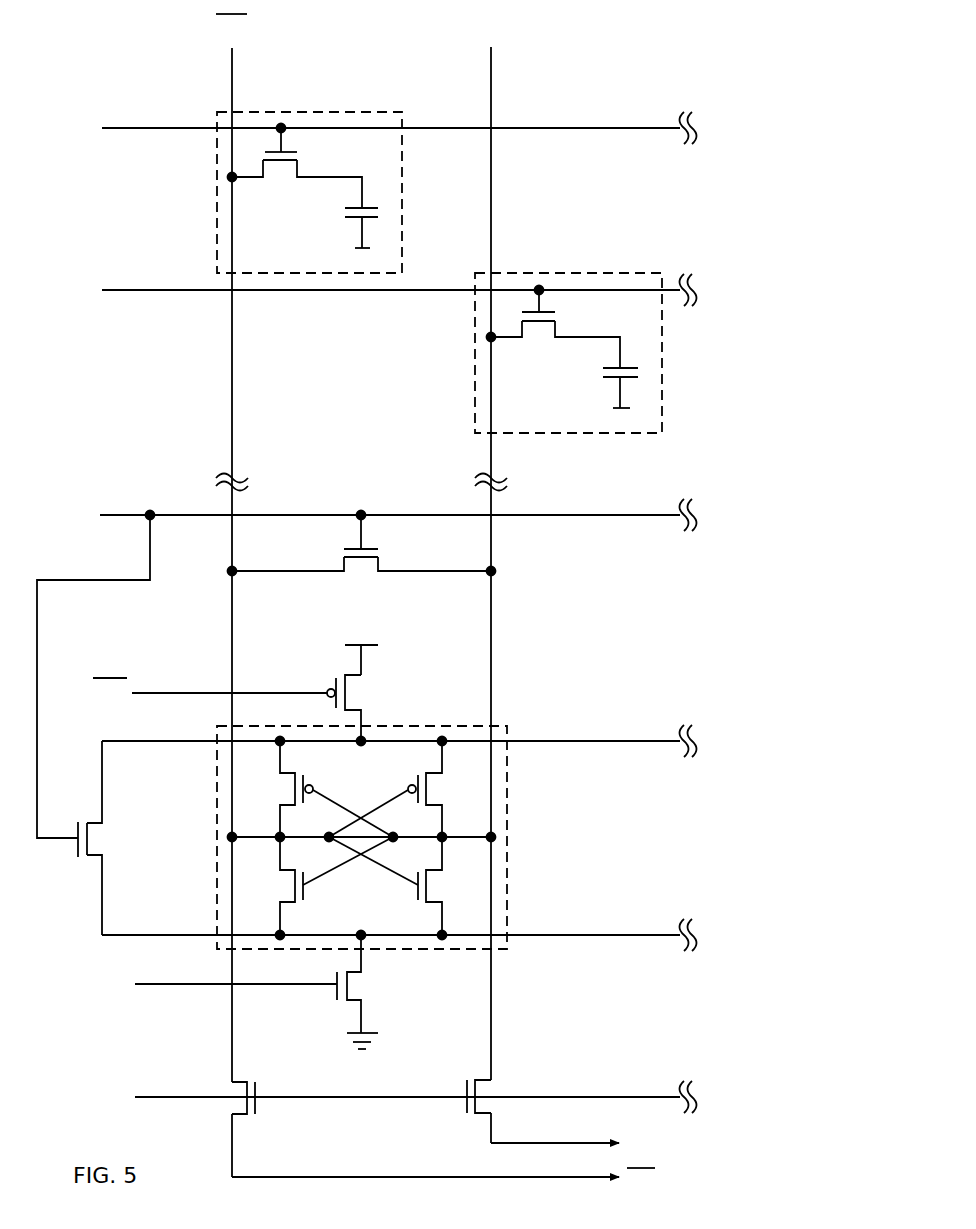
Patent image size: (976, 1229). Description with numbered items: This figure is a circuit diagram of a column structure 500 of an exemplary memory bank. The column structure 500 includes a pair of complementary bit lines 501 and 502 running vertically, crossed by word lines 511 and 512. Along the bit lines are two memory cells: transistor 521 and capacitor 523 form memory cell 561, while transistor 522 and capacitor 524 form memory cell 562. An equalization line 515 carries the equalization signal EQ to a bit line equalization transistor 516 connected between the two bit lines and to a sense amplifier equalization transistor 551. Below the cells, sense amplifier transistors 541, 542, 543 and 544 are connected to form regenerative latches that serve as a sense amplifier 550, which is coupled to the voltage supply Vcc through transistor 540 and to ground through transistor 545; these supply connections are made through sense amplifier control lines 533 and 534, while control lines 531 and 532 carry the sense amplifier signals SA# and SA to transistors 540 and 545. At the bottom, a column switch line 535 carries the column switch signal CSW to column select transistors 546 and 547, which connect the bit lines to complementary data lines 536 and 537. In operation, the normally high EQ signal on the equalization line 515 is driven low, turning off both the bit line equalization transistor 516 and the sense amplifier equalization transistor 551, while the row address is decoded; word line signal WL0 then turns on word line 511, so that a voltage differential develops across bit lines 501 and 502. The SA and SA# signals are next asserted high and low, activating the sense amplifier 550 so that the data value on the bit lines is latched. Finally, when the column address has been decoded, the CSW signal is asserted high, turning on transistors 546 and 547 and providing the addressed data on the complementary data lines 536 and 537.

The column structure 500 is at (100, 62).
The bit line 501 is at (491, 93).
The bit line 502 is at (233, 95).
The word line 511 is at (135, 290).
The word line 512 is at (135, 128).
The equalization line 515 is at (128, 515).
The equalization transistor 516 is at (378, 562).
The memory cell transistor 521 is at (555, 327).
The memory cell transistor 522 is at (302, 163).
The memory cell capacitor 523 is at (622, 367).
The memory cell capacitor 524 is at (345, 208).
The sense amplifier control line 531 is at (162, 693).
The sense amplifier control line 532 is at (150, 984).
The sense amplifier control line 533 is at (363, 739).
The sense amplifier control line 534 is at (362, 935).
The column switch line 535 is at (152, 1097).
The data line 536 is at (540, 1143).
The data line 537 is at (345, 1177).
The sense amplifier transistor 540 is at (349, 674).
The sense amplifier transistor 541 is at (295, 795).
The sense amplifier transistor 542 is at (426, 796).
The sense amplifier transistor 543 is at (295, 892).
The sense amplifier transistor 544 is at (426, 891).
The sense amplifier transistor 545 is at (358, 997).
The column select transistor 546 is at (257, 1088).
The column select transistor 547 is at (465, 1088).
The sense amplifier 550 is at (507, 868).
The sense amplifier equalization transistor 551 is at (93, 857).
The memory cell 561 is at (523, 272).
The memory cell 562 is at (332, 110).